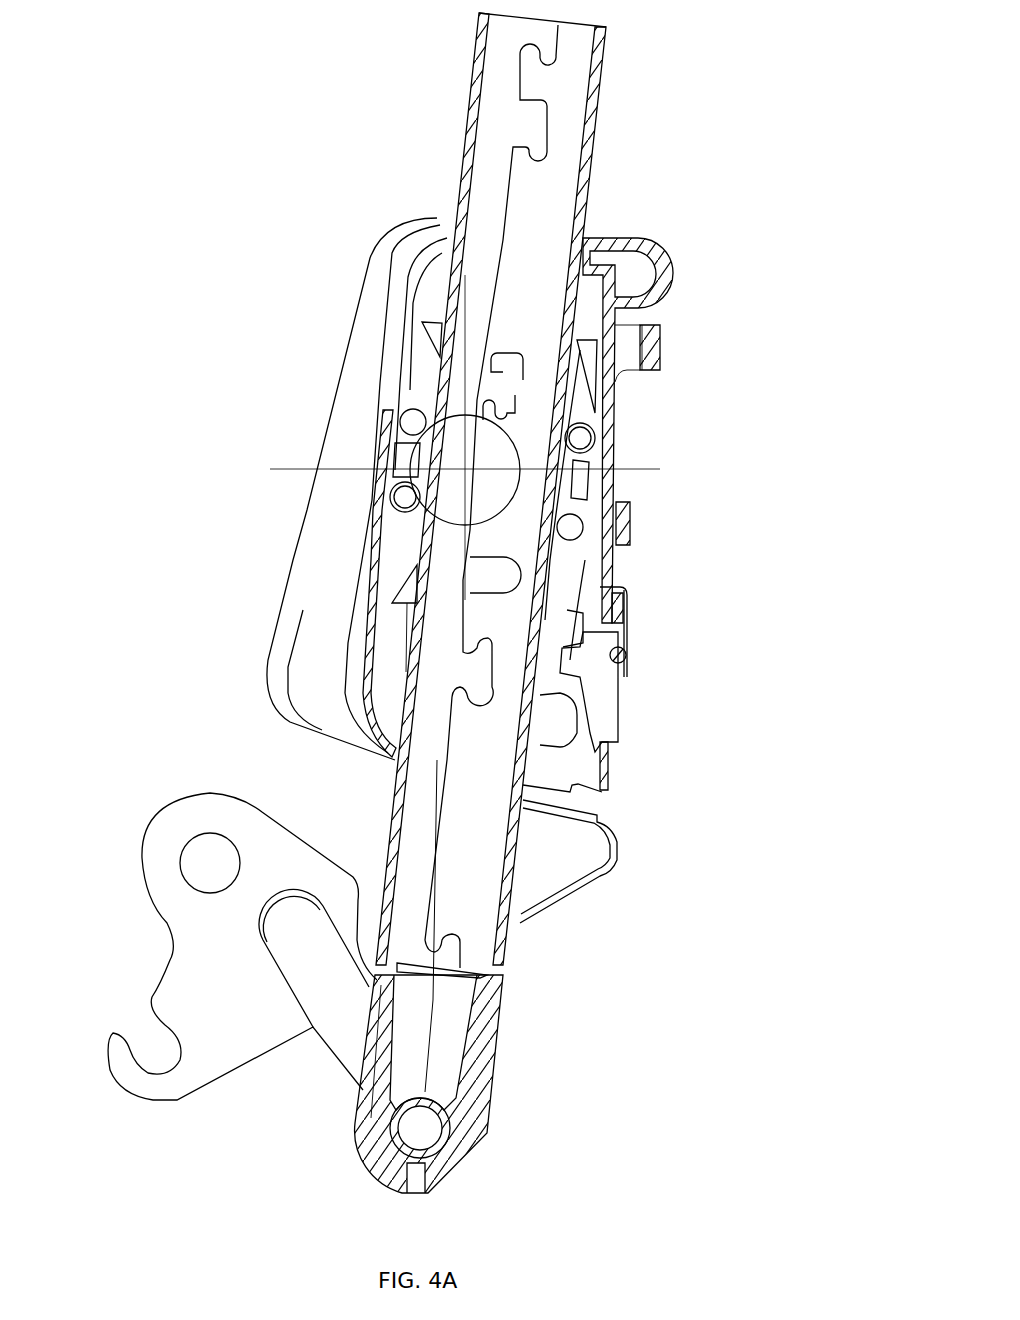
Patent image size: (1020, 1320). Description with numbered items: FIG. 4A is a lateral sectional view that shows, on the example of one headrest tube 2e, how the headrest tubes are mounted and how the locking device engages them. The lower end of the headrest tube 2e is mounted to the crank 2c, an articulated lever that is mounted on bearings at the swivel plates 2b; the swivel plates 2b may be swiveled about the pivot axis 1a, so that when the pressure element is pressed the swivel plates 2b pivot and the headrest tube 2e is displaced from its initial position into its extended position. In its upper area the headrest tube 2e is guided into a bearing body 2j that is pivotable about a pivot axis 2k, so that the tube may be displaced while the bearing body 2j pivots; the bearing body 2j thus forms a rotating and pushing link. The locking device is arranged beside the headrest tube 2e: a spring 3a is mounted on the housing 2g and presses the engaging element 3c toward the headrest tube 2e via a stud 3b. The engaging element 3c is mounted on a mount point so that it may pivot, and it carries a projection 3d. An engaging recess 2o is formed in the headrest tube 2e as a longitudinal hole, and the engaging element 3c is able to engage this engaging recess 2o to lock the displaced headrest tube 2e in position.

The headrest tube 2e is at (598, 146).
The bearing body 2j is at (430, 398).
The pivot axis 2k is at (467, 462).
The housing 2g is at (602, 455).
The spring 3a is at (628, 626).
The stud 3b is at (626, 656).
The engaging element 3c is at (614, 716).
The latch projection 3d is at (610, 745).
The engaging recess 2o is at (515, 903).
The pivot axis 1a is at (188, 863).
The swivel plate 2b is at (183, 952).
The crank 2c is at (313, 990).